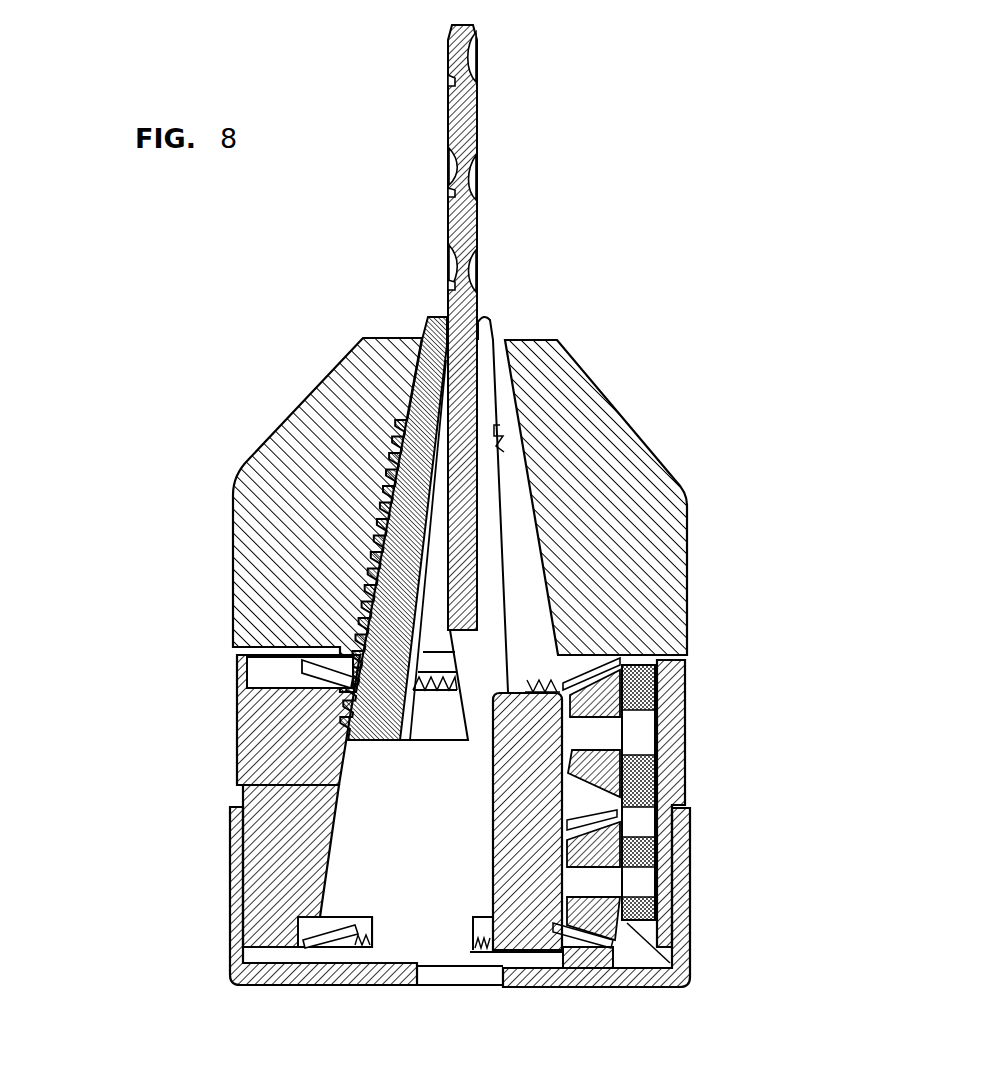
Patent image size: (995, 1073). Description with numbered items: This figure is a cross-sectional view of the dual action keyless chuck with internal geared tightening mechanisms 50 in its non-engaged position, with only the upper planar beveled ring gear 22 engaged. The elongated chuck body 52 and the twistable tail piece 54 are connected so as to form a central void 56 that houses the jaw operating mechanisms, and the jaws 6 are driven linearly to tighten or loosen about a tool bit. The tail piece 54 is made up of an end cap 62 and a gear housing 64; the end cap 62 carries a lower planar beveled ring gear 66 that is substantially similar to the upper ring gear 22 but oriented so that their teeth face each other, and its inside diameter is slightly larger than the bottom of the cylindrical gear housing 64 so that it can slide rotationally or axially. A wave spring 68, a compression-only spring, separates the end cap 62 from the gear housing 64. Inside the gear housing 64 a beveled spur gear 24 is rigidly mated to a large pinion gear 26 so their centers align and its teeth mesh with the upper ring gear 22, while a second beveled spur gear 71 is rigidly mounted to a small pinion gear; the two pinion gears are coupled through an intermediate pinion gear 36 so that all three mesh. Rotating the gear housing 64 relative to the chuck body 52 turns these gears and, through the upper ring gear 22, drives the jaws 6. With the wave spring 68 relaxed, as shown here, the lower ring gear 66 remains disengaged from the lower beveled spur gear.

The jaws 6 is at (385, 443).
The upper planar beveled ring gear 22 is at (350, 690).
The beveled spur gear 24 is at (600, 670).
The large pinion gear 26 is at (680, 775).
The intermediate pinion gear 36 is at (683, 812).
The dual action keyless chuck with internal geared tightening mechanisms 50 is at (133, 570).
The elongated chuck body 52 is at (688, 578).
The twistable tail piece 54 is at (688, 883).
The central void 56 is at (347, 857).
The end cap 62 is at (595, 988).
The gear housing 64 is at (237, 754).
The lower planar beveled ring gear 66 is at (558, 968).
The wave spring 68 is at (240, 980).
The second beveled spur gear 71 is at (690, 944).